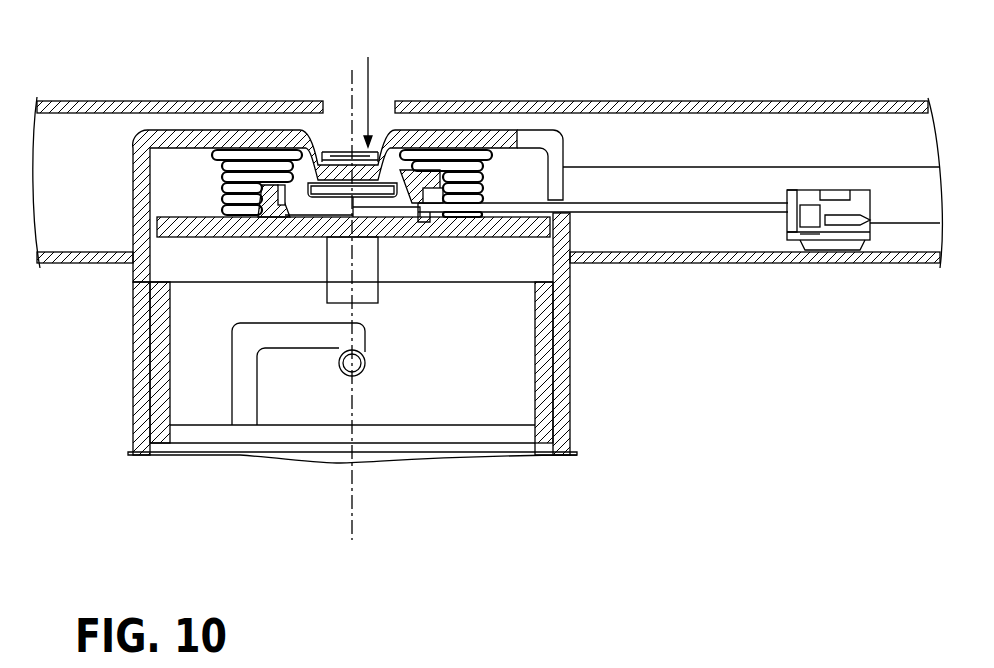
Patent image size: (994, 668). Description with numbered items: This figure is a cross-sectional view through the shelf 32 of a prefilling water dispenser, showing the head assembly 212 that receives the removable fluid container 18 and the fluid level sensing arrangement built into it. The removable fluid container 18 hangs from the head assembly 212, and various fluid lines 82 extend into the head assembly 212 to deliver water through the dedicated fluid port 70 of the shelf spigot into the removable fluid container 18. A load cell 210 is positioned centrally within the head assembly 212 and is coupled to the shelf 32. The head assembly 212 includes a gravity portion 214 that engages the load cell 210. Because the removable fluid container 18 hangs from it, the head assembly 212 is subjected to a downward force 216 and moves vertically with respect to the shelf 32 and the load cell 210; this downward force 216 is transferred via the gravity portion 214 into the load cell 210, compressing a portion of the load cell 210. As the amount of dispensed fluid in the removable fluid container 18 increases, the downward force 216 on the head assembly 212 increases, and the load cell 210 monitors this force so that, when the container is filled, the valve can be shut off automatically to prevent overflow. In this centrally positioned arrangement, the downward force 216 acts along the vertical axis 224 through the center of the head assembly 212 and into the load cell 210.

The removable fluid container 18 is at (560, 437).
The shelf 32 is at (778, 100).
The dedicated fluid port 70 is at (362, 290).
The fluid lines 82 is at (672, 187).
The load cell 210 is at (445, 140).
The head assembly 212 is at (572, 355).
The gravity portion 214 is at (347, 140).
The downward force 216 is at (369, 88).
The vertical axis 224 is at (352, 488).